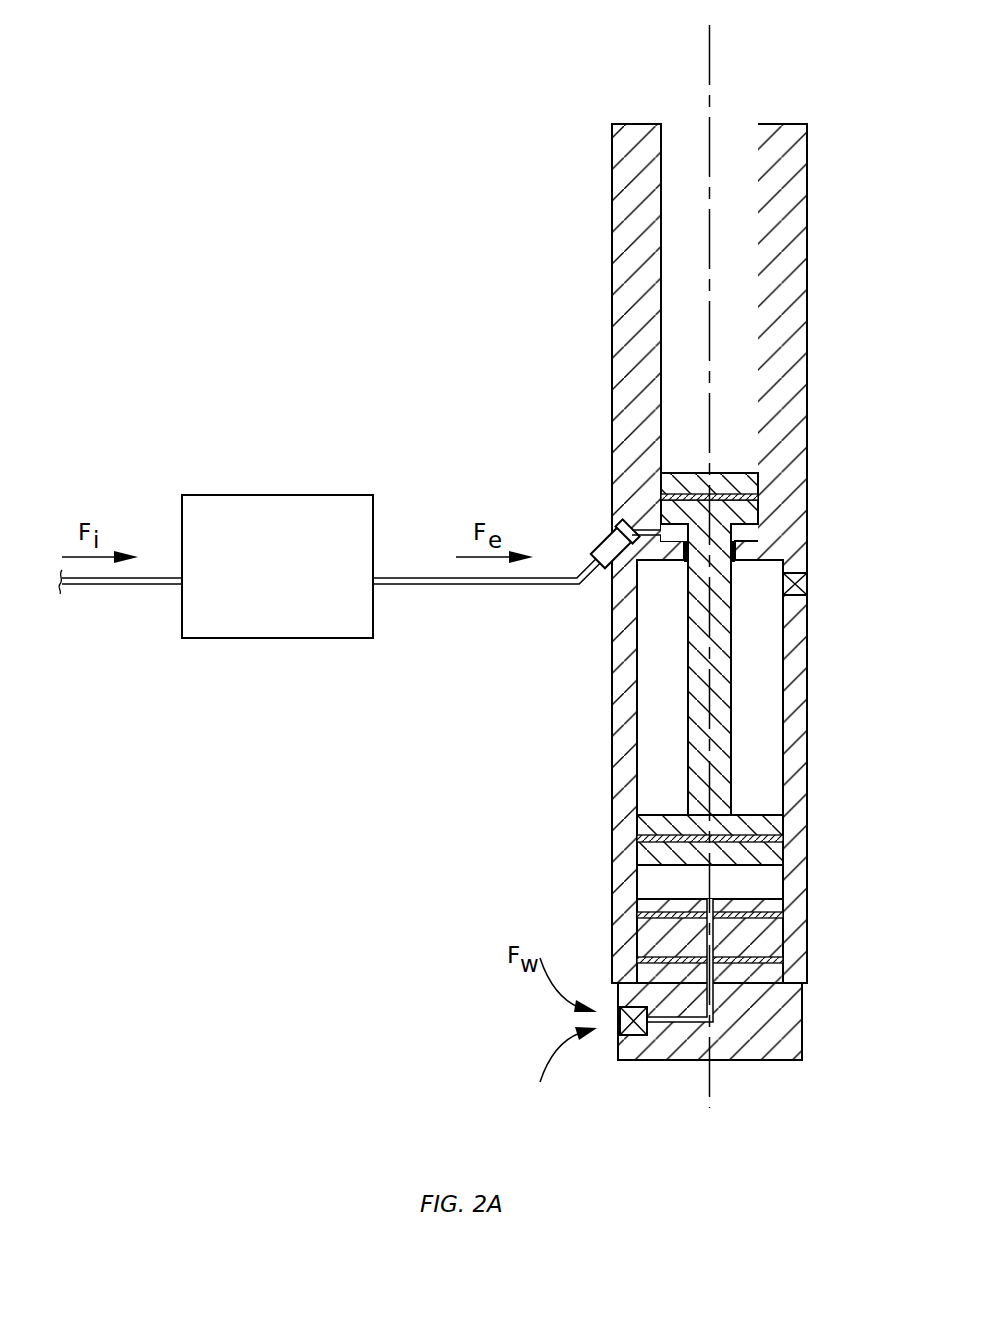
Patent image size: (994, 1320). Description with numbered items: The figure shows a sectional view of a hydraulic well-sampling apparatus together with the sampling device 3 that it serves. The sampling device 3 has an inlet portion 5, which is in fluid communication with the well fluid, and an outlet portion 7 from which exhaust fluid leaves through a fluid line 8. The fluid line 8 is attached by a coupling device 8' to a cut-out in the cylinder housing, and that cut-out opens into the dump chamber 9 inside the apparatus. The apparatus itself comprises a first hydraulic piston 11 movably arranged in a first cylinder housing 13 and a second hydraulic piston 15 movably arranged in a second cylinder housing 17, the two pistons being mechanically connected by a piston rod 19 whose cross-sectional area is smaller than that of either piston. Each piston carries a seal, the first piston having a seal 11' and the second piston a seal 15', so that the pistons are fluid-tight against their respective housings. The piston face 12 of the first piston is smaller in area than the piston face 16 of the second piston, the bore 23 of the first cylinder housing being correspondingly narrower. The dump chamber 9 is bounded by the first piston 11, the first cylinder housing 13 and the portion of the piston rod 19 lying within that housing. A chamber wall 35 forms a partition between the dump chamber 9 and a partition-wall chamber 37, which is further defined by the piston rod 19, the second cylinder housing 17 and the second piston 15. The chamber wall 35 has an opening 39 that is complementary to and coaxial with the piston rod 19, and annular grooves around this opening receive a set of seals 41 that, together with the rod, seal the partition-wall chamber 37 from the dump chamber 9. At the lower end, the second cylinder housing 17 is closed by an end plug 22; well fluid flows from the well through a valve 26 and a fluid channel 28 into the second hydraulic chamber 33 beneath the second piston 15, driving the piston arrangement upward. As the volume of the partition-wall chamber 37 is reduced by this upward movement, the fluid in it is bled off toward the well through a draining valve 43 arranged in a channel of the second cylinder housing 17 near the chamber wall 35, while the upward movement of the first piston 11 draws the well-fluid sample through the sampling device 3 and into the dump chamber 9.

The sampling device 3 is at (240, 483).
The inlet portion 5 is at (177, 587).
The outlet portion 7 is at (375, 585).
The fluid line 8 is at (500, 610).
The coupling device 8' is at (608, 529).
The dump chamber 9 is at (748, 535).
The first hydraulic piston 11 is at (764, 505).
The seal 11' is at (766, 477).
The piston face 12 is at (738, 473).
The first cylinder housing 13 is at (610, 222).
The second hydraulic piston 15 is at (755, 831).
The seal 15' is at (760, 847).
The piston face 16 is at (655, 867).
The second cylinder housing 17 is at (803, 722).
The piston rod 19 is at (723, 658).
The end plug 22 is at (805, 1020).
The cylinder bore 23 is at (662, 352).
The valve 26 is at (637, 1035).
The fluid channel 28 is at (672, 1020).
The second hydraulic chamber 33 is at (770, 884).
The chamber wall 35 is at (745, 548).
The partition-wall chamber 37 is at (778, 751).
The opening 39 is at (702, 555).
The seals 41 is at (662, 517).
The valve 43 is at (810, 583).